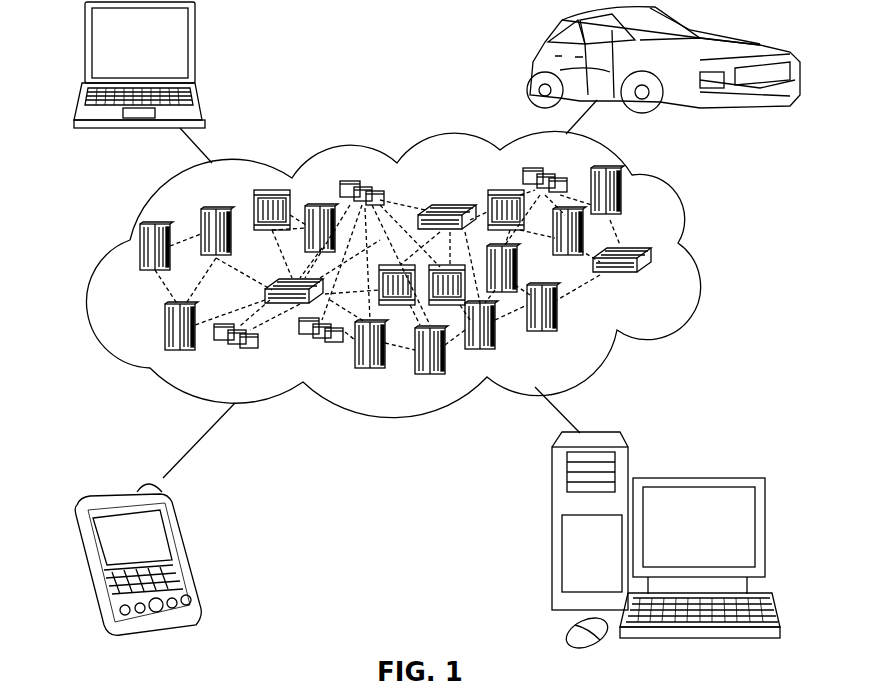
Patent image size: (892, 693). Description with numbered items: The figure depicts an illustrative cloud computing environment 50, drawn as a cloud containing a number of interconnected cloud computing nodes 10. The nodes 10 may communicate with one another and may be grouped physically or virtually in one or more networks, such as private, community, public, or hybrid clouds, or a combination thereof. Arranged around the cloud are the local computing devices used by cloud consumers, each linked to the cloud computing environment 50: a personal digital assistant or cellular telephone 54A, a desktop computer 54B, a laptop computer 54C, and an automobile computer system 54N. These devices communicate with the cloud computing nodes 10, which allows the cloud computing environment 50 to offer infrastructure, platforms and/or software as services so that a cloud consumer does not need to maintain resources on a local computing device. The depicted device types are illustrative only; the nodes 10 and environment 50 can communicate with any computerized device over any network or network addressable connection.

The cloud computing nodes 10 is at (660, 283).
The cloud computing environment 50 is at (697, 258).
The personal digital assistant (PDA) or cellular telephone 54A is at (183, 550).
The desktop computer 54B is at (697, 477).
The laptop computer 54C is at (193, 50).
The automobile computer system 54N is at (530, 62).